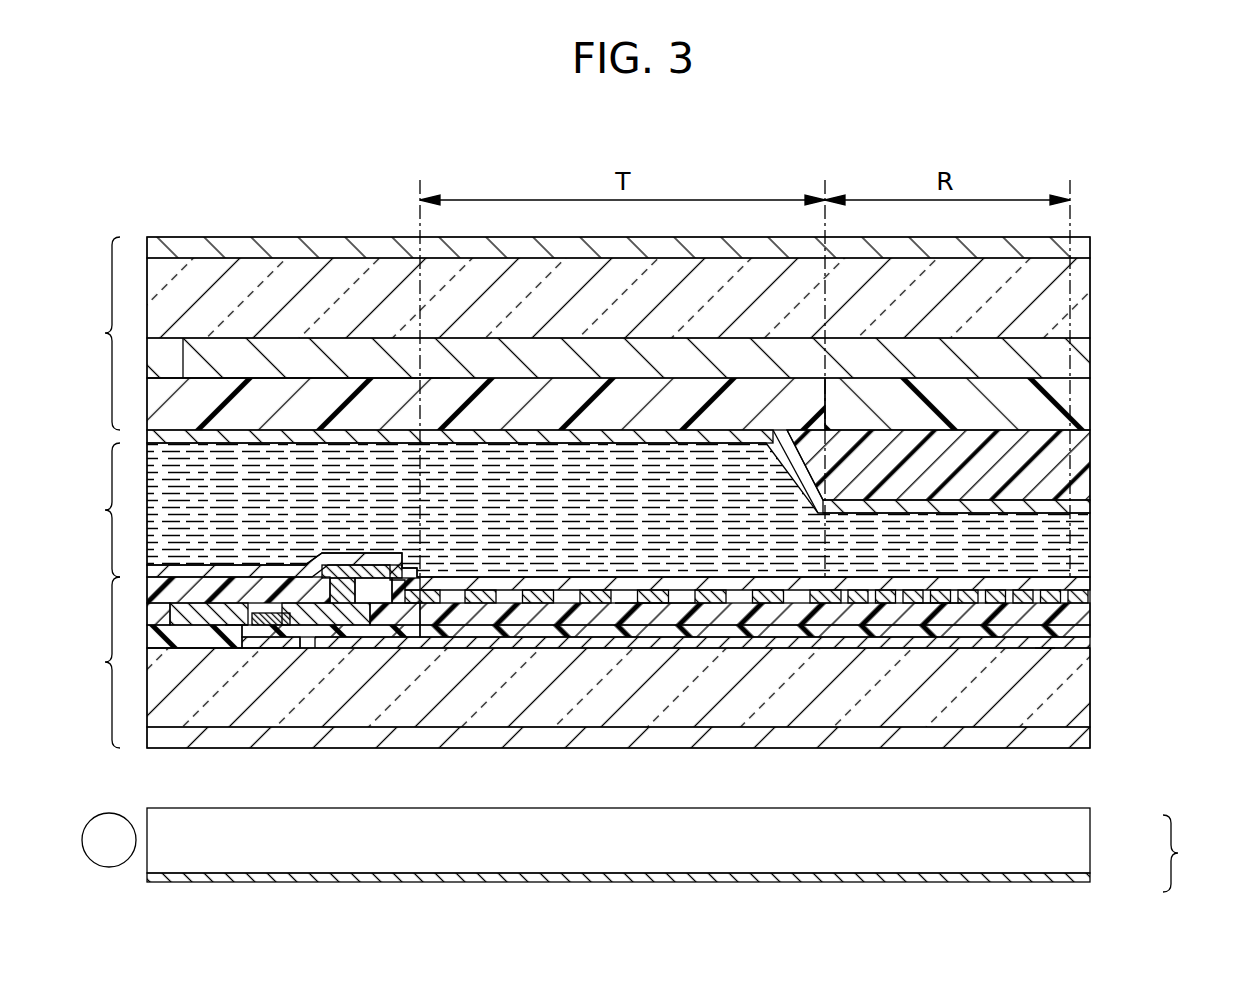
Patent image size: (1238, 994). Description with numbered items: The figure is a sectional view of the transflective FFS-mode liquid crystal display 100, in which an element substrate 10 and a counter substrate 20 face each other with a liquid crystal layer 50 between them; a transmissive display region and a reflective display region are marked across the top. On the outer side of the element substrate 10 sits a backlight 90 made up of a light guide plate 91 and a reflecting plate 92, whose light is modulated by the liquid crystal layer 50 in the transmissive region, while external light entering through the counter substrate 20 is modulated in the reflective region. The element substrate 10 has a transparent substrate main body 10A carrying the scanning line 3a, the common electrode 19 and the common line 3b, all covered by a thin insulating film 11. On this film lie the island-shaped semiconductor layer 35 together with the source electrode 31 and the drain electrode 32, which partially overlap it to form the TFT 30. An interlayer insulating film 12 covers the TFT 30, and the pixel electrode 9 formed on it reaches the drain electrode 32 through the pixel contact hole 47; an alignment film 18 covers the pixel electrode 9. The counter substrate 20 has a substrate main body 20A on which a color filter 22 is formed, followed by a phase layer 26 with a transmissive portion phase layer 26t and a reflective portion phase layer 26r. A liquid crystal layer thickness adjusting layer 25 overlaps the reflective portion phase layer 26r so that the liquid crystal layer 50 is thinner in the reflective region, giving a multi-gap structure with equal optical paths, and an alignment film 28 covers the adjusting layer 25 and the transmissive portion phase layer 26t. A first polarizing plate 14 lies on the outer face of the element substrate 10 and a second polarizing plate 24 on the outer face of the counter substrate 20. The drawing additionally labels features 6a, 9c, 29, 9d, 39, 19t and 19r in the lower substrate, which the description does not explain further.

The liquid crystal display 100 is at (1006, 136).
The counter substrate 20 is at (99, 333).
The liquid crystal layer 50 is at (584, 510).
The element substrate 10 is at (99, 662).
The polarizing plate 24 is at (1090, 247).
The substrate main body 20A is at (1090, 300).
The color filter 22 is at (1090, 358).
The reflective portion phase layer 26r is at (1090, 405).
The transmissive portion phase layer 26t is at (256, 398).
The phase layer 26 is at (330, 384).
The liquid crystal layer thickness adjusting layer 25 is at (1090, 455).
The alignment film 28 is at (1090, 506).
The alignment film 18 is at (1090, 583).
The pixel electrode 9 is at (378, 571).
The pixel contact hole 47 is at (342, 584).
The interlayer insulating film 12 is at (1090, 614).
The data line 6a is at (190, 611).
The source electrode 31 is at (237, 611).
The drain electrode 32 is at (337, 614).
The semiconductor layer 35 is at (278, 627).
The transmissive pixel electrode portion 9c is at (483, 591).
The slit between pixel electrodes 29 is at (625, 591).
The reflective pixel electrode portion 9d is at (990, 591).
The slit between pixel electrodes 39 is at (925, 591).
The thin insulating film 11 is at (1090, 640).
The scanning line 3a is at (262, 641).
The TFT 30 is at (236, 660).
The common electrode 19 is at (822, 666).
The transmissive region light shielding layer 19t is at (683, 650).
The reflective region light shielding layer 19r is at (942, 650).
The common line 3b is at (1045, 650).
The substrate main body 10A is at (1090, 688).
The polarizing plate 14 is at (1090, 738).
The backlight 90 is at (648, 852).
The light guide plate 91 is at (1090, 840).
The reflecting plate 92 is at (1090, 878).